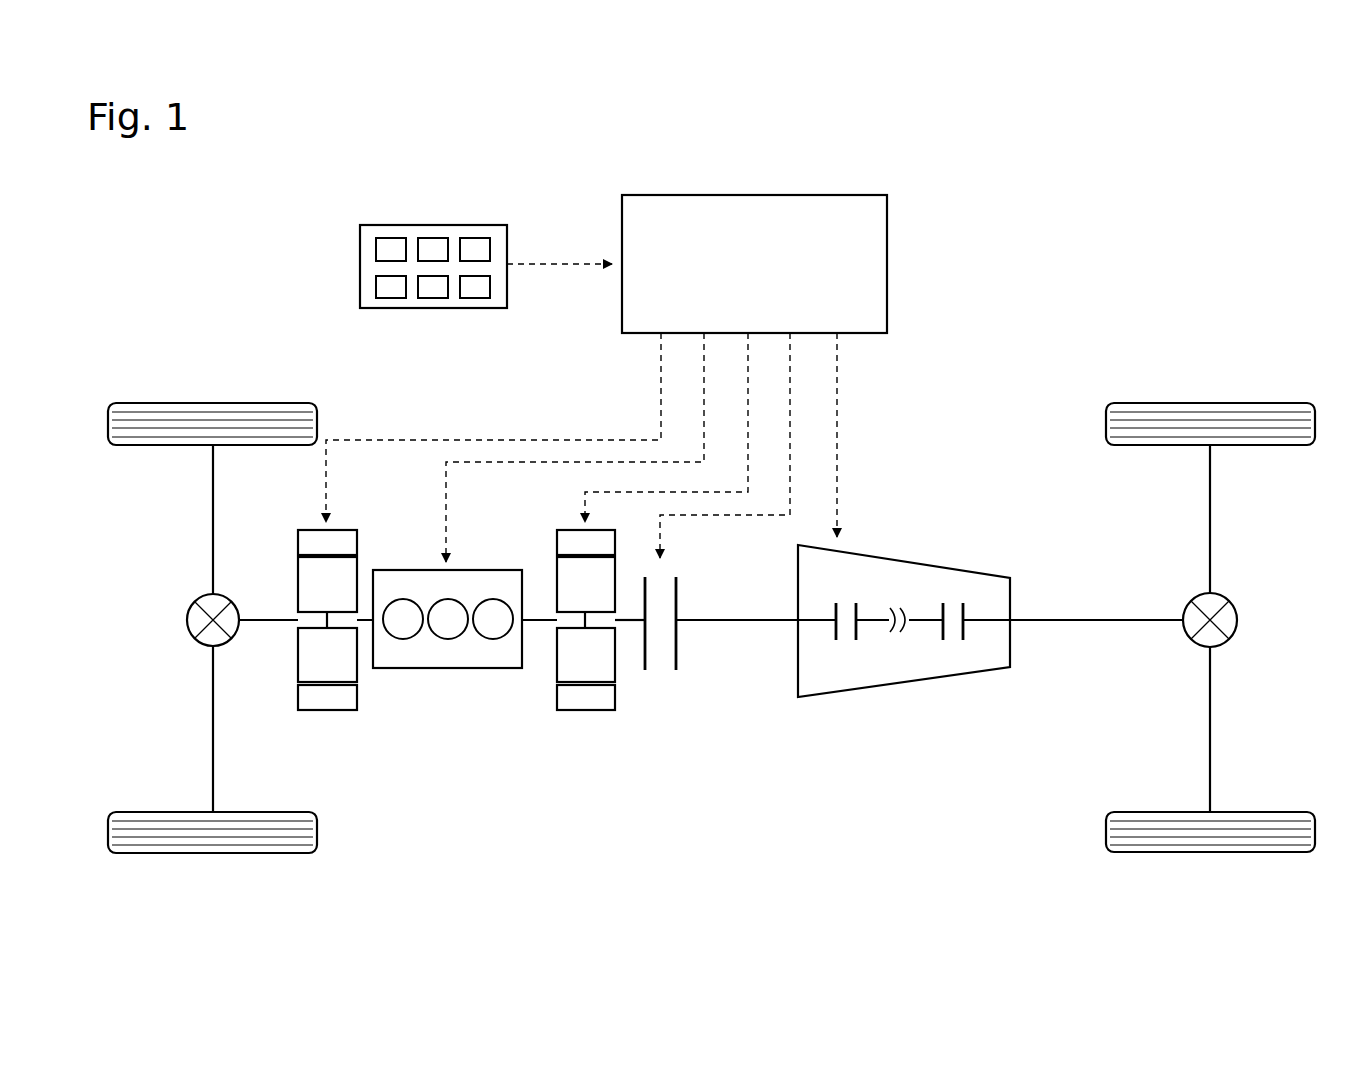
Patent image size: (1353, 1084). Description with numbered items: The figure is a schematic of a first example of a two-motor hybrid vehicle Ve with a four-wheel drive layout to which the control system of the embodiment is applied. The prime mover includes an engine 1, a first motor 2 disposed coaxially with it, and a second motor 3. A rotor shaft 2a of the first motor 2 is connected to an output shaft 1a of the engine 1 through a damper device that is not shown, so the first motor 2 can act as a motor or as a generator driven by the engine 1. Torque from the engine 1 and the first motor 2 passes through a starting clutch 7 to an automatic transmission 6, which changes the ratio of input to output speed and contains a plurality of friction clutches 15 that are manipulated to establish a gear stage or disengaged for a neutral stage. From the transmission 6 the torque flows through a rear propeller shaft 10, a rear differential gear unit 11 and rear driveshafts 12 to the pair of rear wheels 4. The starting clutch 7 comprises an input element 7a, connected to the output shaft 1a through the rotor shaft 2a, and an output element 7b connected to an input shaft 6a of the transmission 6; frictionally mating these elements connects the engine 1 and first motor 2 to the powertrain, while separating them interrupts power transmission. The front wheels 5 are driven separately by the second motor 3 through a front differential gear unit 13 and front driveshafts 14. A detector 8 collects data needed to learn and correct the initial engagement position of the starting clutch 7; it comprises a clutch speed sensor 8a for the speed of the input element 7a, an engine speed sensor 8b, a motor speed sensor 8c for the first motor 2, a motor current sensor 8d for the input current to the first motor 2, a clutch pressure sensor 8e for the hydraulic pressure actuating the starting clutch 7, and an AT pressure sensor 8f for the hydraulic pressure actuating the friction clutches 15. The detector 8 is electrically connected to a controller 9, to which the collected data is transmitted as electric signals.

The vehicle Ve is at (1028, 166).
The engine 1 is at (436, 669).
The output shaft 1a is at (540, 626).
The first motor 2 is at (585, 720).
The rotor shaft 2a is at (629, 626).
The second motor 3 is at (352, 722).
The rear wheels 4 is at (1212, 402).
The front wheels 5 is at (215, 402).
The automatic transmission 6 is at (938, 567).
The input shaft 6a is at (743, 619).
The starting clutch 7 is at (686, 683).
The input element 7a is at (646, 672).
The output element 7b is at (677, 657).
The detector 8 is at (486, 273).
The clutch speed sensor 8a is at (392, 237).
The engine speed sensor 8b is at (433, 237).
The motor speed sensor 8c is at (477, 237).
The motor current sensor 8d is at (390, 299).
The clutch pressure sensor 8e is at (433, 299).
The AT pressure sensor 8f is at (477, 299).
The controller 9 is at (887, 262).
The rear propeller shaft 10 is at (1095, 619).
The rear differential gear unit 11 is at (1237, 620).
The rear driveshafts 12 is at (1210, 517).
The front differential gear unit 13 is at (187, 620).
The front driveshafts 14 is at (213, 515).
The friction clutches 15 is at (851, 652).